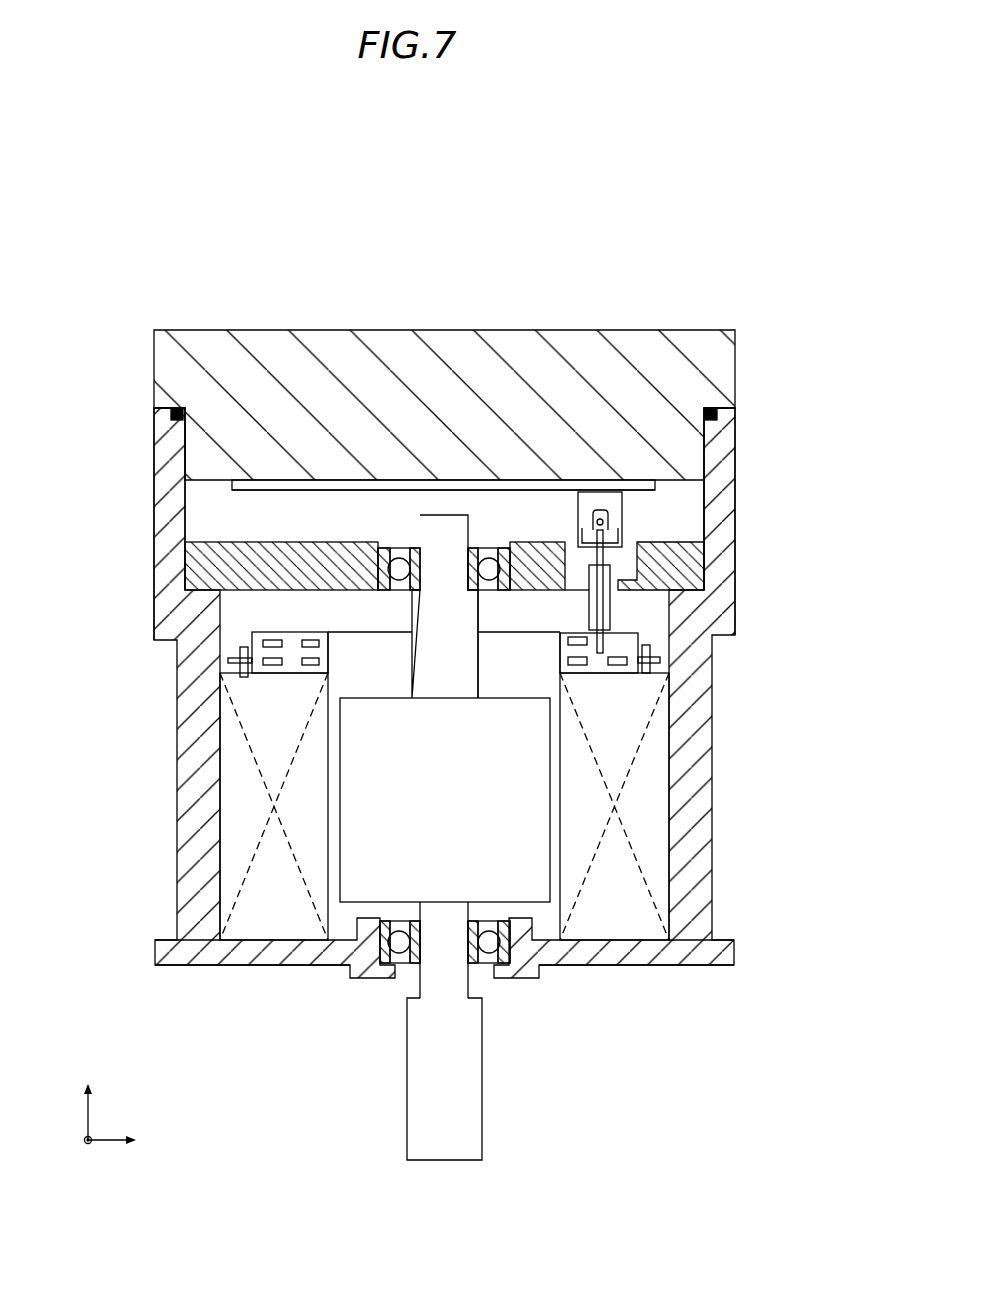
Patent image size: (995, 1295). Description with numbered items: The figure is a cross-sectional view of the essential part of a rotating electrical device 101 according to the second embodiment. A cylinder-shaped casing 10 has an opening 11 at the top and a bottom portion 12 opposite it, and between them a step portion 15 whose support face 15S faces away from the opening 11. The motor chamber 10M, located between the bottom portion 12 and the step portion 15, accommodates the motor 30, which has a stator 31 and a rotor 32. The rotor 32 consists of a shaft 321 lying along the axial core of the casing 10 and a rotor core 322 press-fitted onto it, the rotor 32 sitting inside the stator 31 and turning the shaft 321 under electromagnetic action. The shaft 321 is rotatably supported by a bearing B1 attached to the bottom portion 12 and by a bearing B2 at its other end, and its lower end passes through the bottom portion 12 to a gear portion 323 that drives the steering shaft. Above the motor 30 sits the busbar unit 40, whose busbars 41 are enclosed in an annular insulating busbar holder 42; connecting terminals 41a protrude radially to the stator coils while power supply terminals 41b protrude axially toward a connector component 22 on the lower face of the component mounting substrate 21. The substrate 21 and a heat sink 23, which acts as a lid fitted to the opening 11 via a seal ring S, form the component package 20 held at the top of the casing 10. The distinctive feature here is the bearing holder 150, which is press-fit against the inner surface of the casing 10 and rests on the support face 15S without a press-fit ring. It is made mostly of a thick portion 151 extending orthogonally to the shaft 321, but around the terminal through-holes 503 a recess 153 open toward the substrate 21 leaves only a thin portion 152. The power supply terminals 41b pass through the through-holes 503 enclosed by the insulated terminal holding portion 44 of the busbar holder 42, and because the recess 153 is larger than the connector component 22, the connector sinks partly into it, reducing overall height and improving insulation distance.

The rotating electrical device 101 is at (638, 220).
The casing 10 is at (710, 748).
The opening 11 is at (690, 412).
The bottom portion 12 is at (628, 965).
The step portion 15 is at (703, 611).
The support face 15S is at (708, 578).
The bearing holder 150 is at (297, 533).
The thick portion 151 is at (242, 541).
The thin portion 152 is at (592, 568).
The recess 153 is at (624, 548).
The component package 20 is at (577, 268).
The component mounting substrate 21 is at (332, 490).
The connector component 22 is at (545, 490).
The heat sink 23 is at (445, 330).
The motor 30 is at (64, 720).
The stator 31 is at (265, 830).
The rotor 32 is at (104, 693).
The shaft 321 is at (437, 682).
The rotor core 322 is at (355, 765).
The gear portion 323 is at (483, 1098).
The busbar unit 40 is at (104, 602).
The busbar 41 is at (252, 655).
The connecting terminal 41a is at (240, 662).
The power supply terminal 41b is at (694, 565).
The busbar holder 42 is at (263, 643).
The insulated terminal holding portion 44 is at (628, 610).
The terminal through-hole 503 is at (586, 560).
The bearing B1 is at (395, 978).
The bearing B2 is at (402, 547).
The seal ring S is at (720, 412).
The motor chamber 10M is at (470, 684).